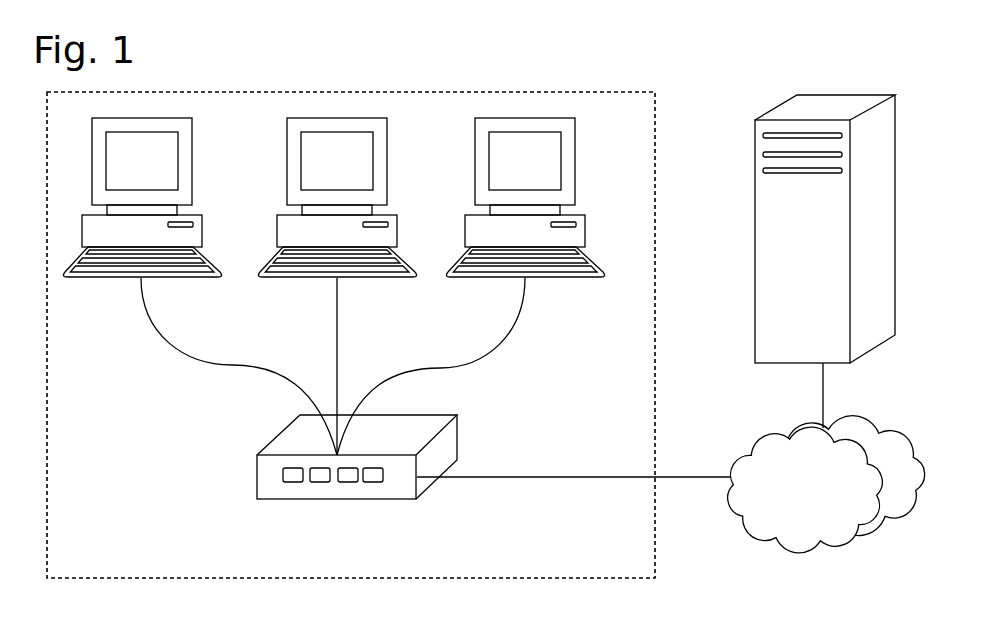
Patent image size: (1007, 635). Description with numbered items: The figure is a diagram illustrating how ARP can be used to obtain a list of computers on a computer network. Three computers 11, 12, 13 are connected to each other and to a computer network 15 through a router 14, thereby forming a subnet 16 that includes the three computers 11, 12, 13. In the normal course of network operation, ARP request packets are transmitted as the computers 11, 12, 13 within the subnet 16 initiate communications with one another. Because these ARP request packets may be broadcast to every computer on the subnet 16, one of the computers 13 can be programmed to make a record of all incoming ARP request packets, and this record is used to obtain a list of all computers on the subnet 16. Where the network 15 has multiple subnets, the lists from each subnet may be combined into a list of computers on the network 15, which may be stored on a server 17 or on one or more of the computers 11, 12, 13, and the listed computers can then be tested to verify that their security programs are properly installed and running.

The computer 11 is at (160, 290).
The computer 12 is at (350, 292).
The computer 13 is at (563, 292).
The router 14 is at (389, 512).
The computer network 15 is at (870, 545).
The subnet 16 is at (617, 589).
The server 17 is at (868, 362).